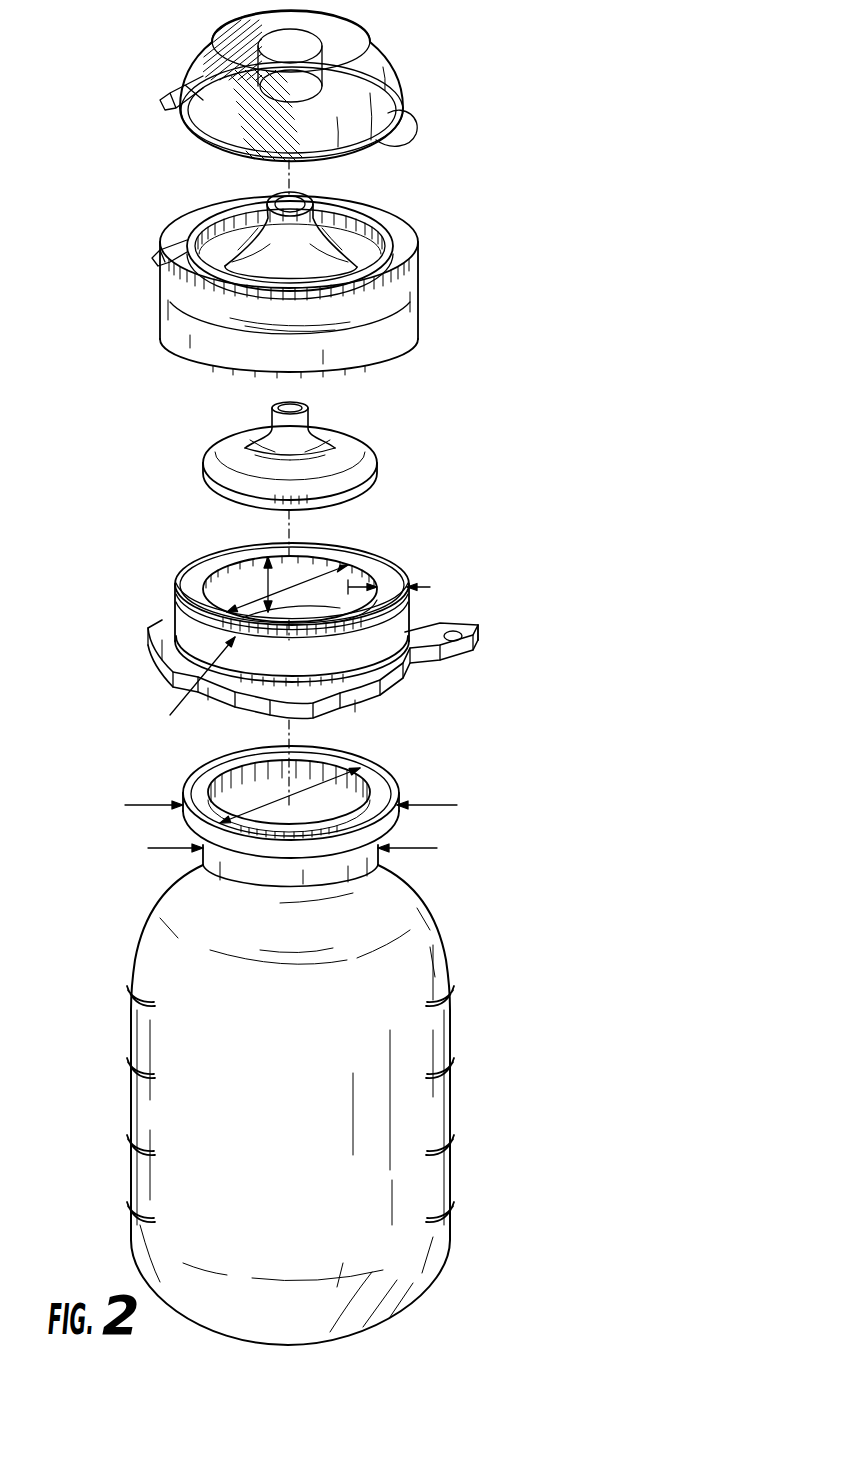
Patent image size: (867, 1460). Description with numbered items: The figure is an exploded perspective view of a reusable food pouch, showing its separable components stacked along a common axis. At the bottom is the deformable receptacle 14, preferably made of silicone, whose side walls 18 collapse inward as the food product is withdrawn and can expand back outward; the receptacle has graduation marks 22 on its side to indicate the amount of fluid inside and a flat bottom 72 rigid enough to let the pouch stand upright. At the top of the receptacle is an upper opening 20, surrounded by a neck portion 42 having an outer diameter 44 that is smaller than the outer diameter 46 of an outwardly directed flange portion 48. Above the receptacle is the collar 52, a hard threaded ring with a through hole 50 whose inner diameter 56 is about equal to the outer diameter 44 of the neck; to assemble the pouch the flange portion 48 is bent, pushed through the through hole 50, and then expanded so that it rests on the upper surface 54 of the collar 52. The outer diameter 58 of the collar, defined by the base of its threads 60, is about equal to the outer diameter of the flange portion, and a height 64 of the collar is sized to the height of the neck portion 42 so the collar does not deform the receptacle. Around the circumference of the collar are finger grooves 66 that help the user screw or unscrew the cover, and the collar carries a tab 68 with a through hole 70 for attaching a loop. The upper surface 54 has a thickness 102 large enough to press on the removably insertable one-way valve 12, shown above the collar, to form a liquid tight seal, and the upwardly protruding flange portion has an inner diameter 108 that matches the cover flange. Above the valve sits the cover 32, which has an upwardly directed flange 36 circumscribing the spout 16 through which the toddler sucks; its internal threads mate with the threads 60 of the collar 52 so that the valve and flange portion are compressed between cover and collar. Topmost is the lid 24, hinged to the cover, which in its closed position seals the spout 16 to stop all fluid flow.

The one-way valve 12 is at (163, 408).
The deformable receptacle 14 is at (346, 1041).
The spout 16 is at (298, 236).
The side walls 18 is at (300, 1102).
The upper opening 20 is at (356, 798).
The graduation marks 22 is at (451, 991).
The lid 24 is at (438, 18).
The cover 32 is at (331, 268).
The flange 36 is at (390, 218).
The neck portion 42 is at (482, 827).
The outer diameter 44 is at (160, 848).
The outer diameter 46 is at (150, 806).
The flange portion 48 is at (482, 768).
The through hole 50 is at (372, 586).
The collar 52 is at (336, 607).
The upper surface 54 is at (197, 587).
The inner diameter 56 is at (250, 603).
The outer diameter 58 is at (330, 540).
The threads 60 is at (183, 622).
The height 64 is at (268, 578).
The finger grooves 66 is at (353, 698).
The tab 68 is at (483, 623).
The through hole 70 is at (462, 636).
The flat bottom 72 is at (375, 1330).
The thickness 102 is at (428, 587).
The inner diameter 108 is at (272, 798).